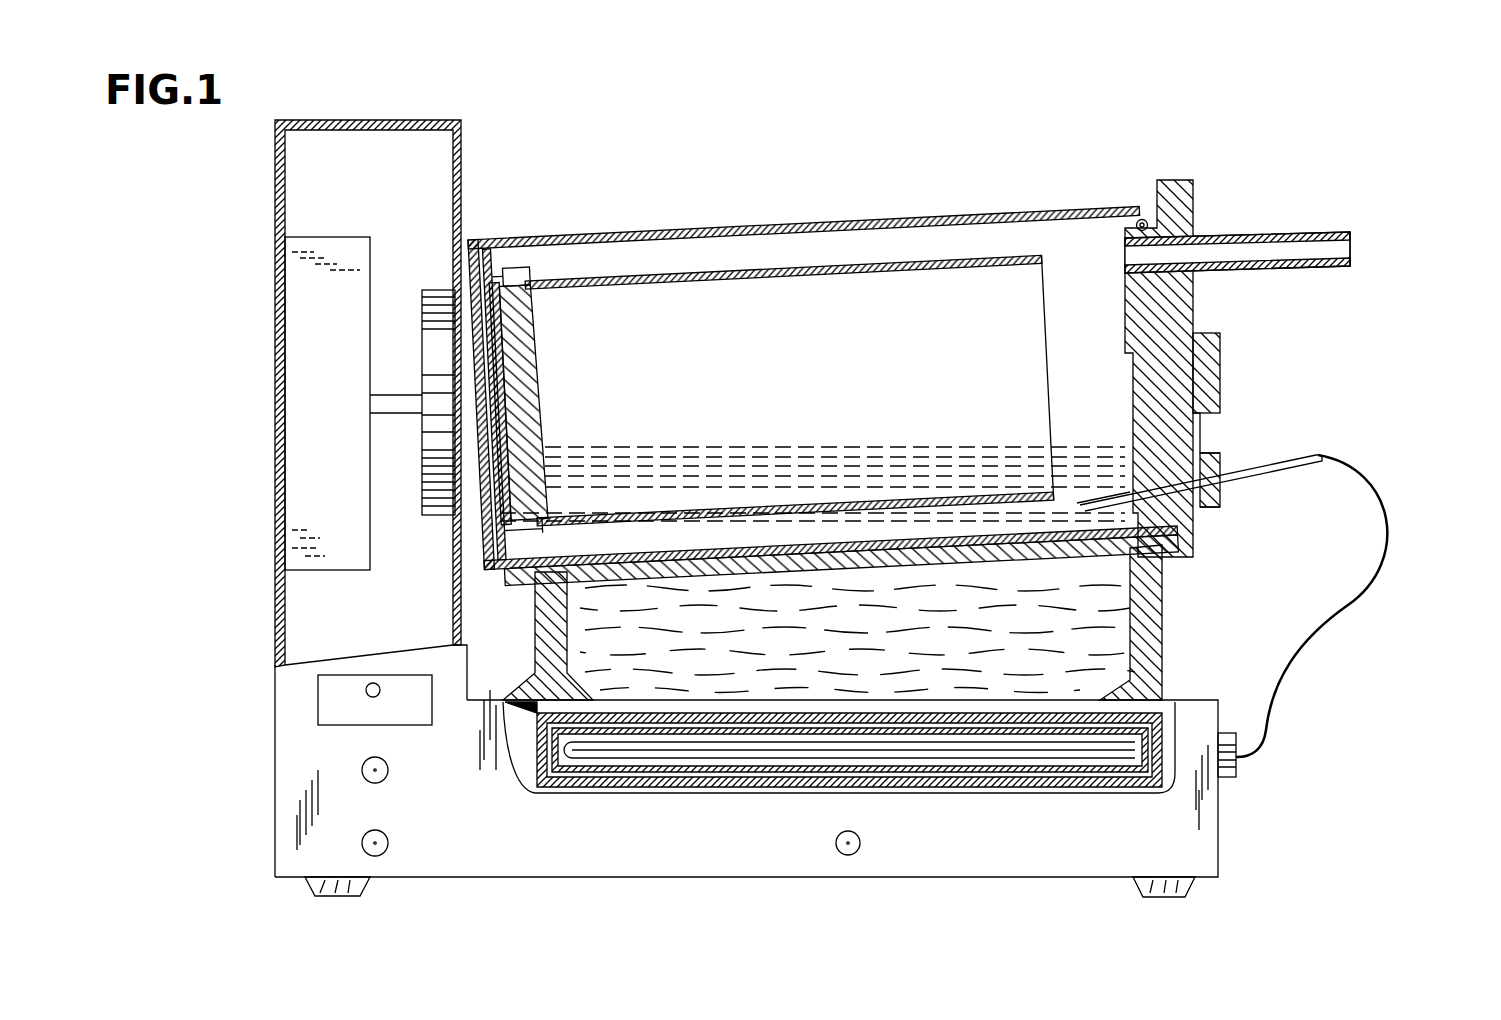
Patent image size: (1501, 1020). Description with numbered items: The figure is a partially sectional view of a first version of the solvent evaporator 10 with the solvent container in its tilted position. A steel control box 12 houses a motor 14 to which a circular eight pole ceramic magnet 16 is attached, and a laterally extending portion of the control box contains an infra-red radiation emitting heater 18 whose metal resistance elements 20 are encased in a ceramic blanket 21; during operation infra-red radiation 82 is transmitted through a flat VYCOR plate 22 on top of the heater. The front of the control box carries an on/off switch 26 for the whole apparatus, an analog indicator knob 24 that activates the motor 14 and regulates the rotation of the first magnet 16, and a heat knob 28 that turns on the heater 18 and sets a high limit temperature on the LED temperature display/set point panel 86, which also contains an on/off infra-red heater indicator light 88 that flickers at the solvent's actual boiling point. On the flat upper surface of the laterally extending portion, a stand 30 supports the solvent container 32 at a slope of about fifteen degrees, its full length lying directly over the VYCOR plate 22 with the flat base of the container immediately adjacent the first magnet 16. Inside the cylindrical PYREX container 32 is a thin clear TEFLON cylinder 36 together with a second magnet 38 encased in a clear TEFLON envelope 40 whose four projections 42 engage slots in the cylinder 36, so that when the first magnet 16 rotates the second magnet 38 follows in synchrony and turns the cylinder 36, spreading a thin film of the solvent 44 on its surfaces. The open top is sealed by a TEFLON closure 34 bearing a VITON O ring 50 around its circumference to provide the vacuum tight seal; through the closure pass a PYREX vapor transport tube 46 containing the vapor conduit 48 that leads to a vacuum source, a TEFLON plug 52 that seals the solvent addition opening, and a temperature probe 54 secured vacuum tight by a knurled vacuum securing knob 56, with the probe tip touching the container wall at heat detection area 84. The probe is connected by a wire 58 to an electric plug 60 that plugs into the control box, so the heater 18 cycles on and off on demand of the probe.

The solvent evaporator 10 is at (762, 165).
The control box 12 is at (402, 120).
The motor 14 is at (372, 540).
The 8 pole ceramic magnet 16 is at (436, 290).
The infra-red radiation emitting heater 18 is at (1122, 782).
The metal resistance elements 20 is at (598, 765).
The ceramic blanket 21 is at (962, 776).
The flat VYCOR plate 22 is at (900, 712).
The analog indicator knob 24 is at (363, 833).
The on/off switch 26 is at (839, 835).
The heat knob 28 is at (364, 760).
The stand 30 is at (1163, 641).
The solvent container 32 is at (735, 233).
The closure 34 is at (1195, 206).
The cylinder 36 is at (1005, 264).
The second magnet 38 is at (528, 418).
The TEFLON envelope 40 is at (544, 357).
The projections 42 is at (524, 274).
The solvent 44 is at (846, 448).
The vapor transport tube 46 is at (1220, 243).
The vapor conduit 48 is at (1356, 230).
The o-ring 50 is at (1140, 218).
The TEFLON plug 52 is at (1222, 352).
The temperature probe 54 is at (1250, 464).
The knurled vacuum securing knob 56 is at (1219, 502).
The wire 58 is at (1380, 502).
The electric plug 60 is at (1236, 776).
The infra-red radiation 82 is at (603, 684).
The heat detection area 84 is at (1078, 500).
The LED temperature display/set point panel 86 is at (400, 680).
The infra-red heater indicator light 88 is at (372, 683).